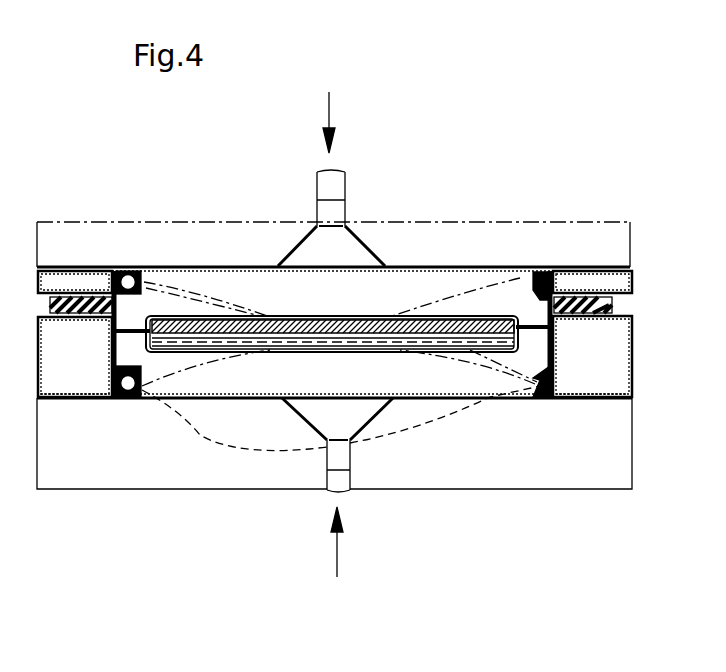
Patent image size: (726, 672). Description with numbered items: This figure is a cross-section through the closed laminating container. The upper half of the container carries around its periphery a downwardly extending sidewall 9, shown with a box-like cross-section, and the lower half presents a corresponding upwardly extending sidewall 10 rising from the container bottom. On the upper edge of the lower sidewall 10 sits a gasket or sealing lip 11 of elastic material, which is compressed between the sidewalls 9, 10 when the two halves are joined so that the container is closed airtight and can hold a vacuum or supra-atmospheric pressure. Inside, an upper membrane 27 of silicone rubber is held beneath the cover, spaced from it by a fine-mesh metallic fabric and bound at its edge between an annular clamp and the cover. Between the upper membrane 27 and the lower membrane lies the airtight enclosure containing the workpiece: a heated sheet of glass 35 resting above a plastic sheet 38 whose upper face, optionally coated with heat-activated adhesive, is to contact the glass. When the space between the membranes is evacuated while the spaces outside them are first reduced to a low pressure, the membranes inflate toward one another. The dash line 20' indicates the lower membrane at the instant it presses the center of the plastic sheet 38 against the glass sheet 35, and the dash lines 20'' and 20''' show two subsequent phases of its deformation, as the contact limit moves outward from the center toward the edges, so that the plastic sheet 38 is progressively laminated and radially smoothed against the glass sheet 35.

The sidewall 9 is at (632, 281).
The sidewall 10 is at (633, 375).
The gasket or sealing lip 11 is at (612, 304).
The membrane 27 is at (140, 280).
The sheet of glass 35 is at (327, 318).
The plastic sheet 38 is at (375, 350).
The dash line showing membrane condition 20' is at (332, 359).
The dash line showing membrane condition 20'' is at (339, 395).
The dash line showing membrane condition 20''' is at (327, 418).